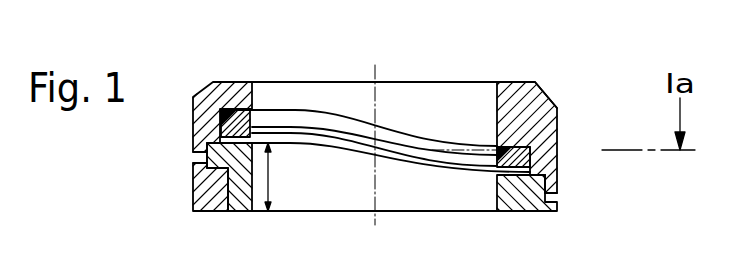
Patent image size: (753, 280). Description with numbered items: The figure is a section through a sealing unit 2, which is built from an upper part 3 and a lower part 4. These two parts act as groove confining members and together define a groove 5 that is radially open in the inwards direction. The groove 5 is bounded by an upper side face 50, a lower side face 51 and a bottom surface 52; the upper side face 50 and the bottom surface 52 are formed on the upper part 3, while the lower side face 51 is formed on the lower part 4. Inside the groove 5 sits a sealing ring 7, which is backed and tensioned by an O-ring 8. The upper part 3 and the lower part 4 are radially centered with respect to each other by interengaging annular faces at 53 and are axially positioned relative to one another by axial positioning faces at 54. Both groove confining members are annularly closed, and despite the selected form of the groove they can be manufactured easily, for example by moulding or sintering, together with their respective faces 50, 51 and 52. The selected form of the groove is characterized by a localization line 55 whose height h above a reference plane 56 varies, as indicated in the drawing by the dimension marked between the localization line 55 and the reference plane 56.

The sealing unit 2 is at (176, 203).
The upper part 3 is at (548, 130).
The lower part 4 is at (547, 212).
The groove 5 is at (548, 181).
The sealing ring 7 is at (228, 82).
The O-ring 8 is at (552, 104).
The upper side face 50 is at (513, 146).
The lower side face 51 is at (229, 211).
The bottom surface 52 is at (210, 90).
The interengaging annular faces 53 is at (193, 151).
The axial positioning faces 54 is at (193, 211).
The localization line 55 is at (311, 150).
The reference plane 56 is at (471, 212).
The height h is at (281, 172).